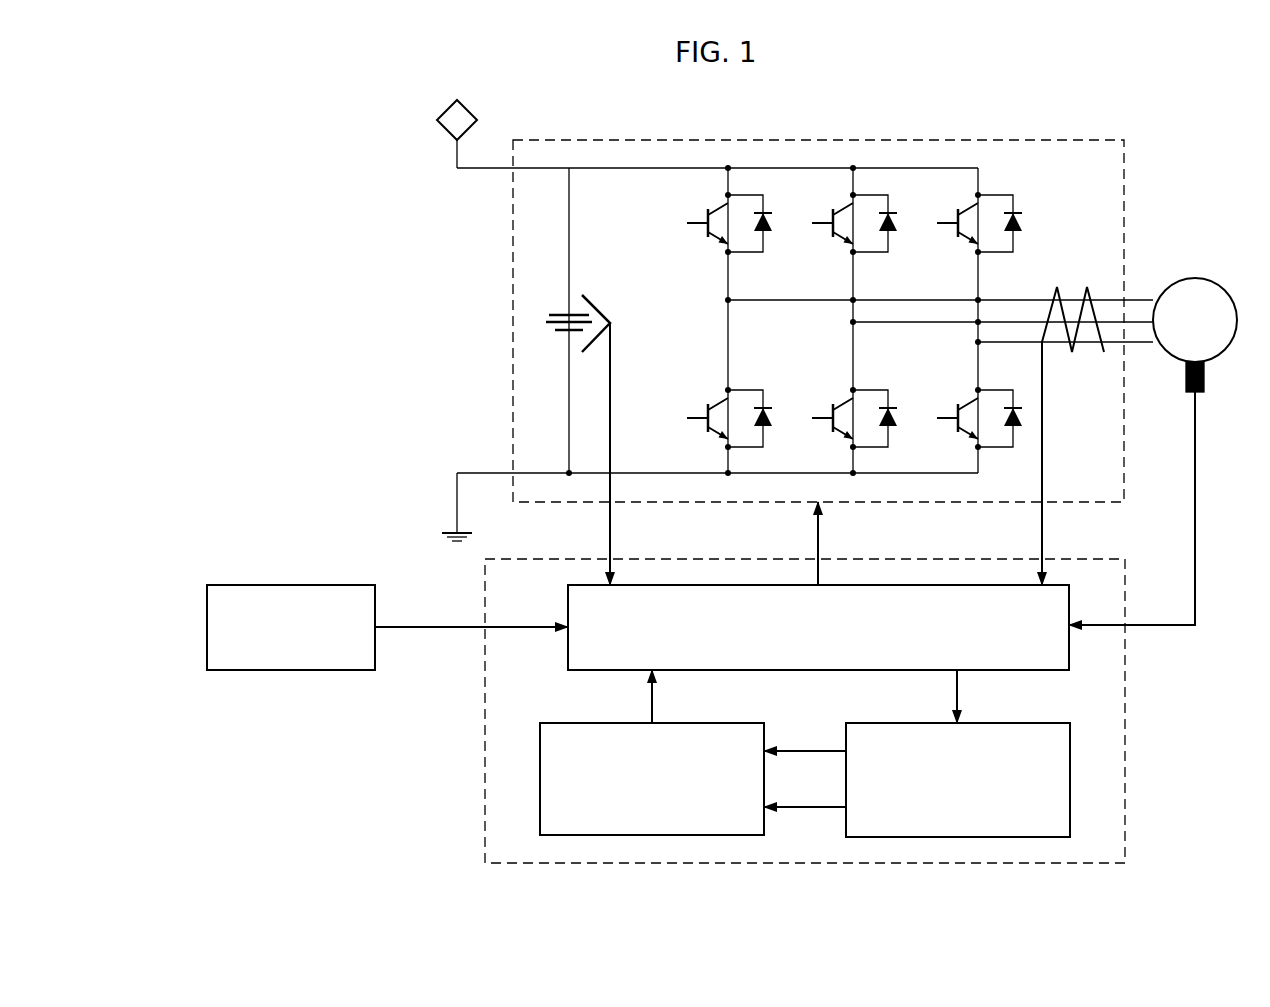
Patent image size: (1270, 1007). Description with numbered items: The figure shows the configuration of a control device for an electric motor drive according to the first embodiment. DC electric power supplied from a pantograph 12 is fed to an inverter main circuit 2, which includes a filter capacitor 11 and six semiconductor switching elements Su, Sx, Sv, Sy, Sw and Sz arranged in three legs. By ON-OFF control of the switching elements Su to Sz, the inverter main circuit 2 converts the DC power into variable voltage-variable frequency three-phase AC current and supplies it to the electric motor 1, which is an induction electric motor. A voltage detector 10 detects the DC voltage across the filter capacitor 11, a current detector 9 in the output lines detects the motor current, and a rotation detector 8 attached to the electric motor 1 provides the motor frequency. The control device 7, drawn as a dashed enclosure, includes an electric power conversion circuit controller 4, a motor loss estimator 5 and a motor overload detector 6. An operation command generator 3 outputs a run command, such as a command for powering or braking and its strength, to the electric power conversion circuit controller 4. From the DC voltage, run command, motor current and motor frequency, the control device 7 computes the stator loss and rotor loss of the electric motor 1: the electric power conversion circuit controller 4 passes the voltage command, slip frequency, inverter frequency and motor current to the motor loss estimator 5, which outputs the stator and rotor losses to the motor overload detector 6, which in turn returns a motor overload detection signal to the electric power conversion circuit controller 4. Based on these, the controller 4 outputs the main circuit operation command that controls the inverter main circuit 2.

The electric motor 1 is at (1180, 278).
The inverter main circuit 2 is at (886, 140).
The operation command generator 3 is at (316, 585).
The electric power conversion circuit controller 4 is at (980, 585).
The motor loss estimator 5 is at (1070, 772).
The motor overload detector 6 is at (540, 750).
The control device 7 is at (1125, 706).
The rotation detector 8 is at (1205, 375).
The current detector 9 is at (1088, 287).
The voltage detector 10 is at (596, 305).
The filter capacitor 11 is at (563, 313).
The pantograph 12 is at (445, 108).
The semiconductor switching element Su is at (708, 213).
The semiconductor switching element Sv is at (835, 228).
The semiconductor switching element Sw is at (958, 228).
The semiconductor switching element Sx is at (700, 410).
The semiconductor switching element Sy is at (830, 410).
The semiconductor switching element Sz is at (955, 412).